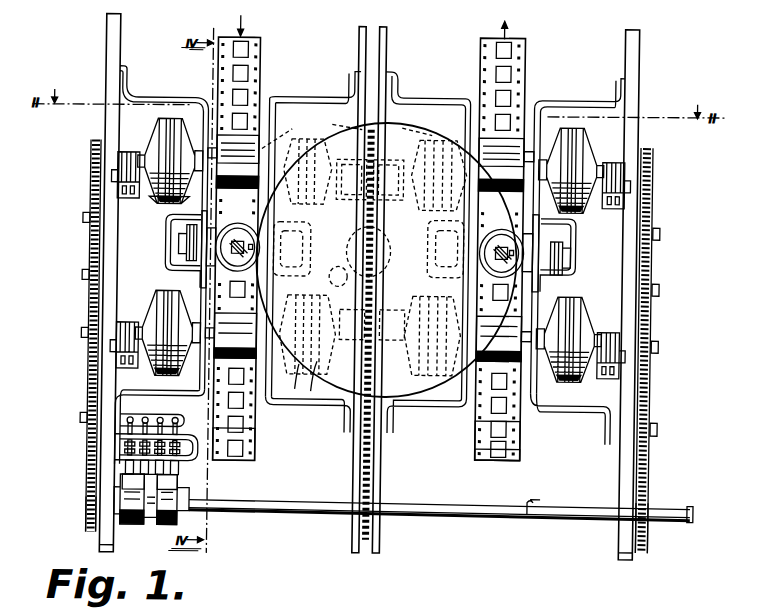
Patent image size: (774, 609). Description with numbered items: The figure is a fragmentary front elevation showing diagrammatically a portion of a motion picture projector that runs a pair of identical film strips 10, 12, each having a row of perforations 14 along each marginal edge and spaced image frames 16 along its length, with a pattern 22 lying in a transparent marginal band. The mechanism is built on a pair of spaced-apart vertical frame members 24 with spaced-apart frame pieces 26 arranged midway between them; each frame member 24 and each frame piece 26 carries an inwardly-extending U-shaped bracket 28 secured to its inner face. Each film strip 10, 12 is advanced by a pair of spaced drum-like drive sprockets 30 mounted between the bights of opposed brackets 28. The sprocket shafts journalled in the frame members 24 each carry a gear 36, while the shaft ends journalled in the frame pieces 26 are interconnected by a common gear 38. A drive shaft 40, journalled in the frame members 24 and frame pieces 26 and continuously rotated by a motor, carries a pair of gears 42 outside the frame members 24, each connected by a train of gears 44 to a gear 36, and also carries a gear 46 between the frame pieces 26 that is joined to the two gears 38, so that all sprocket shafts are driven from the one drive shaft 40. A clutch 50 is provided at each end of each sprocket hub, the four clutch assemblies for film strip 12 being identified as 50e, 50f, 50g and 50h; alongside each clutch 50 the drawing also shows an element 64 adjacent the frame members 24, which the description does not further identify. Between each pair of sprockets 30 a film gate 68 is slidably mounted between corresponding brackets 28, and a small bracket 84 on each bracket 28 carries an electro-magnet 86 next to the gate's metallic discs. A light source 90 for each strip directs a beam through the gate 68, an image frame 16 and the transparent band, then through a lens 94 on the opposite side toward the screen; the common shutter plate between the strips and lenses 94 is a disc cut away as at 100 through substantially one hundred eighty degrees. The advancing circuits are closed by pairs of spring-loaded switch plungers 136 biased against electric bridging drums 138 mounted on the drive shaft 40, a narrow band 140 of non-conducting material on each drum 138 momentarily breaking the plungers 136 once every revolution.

The film strip 10 is at (258, 443).
The film strip 12 is at (523, 436).
The perforations 14 is at (260, 50).
The image frames 16 is at (240, 44).
The pattern 22 is at (500, 460).
The vertical frame members 24 is at (112, 38).
The frame pieces 26 is at (362, 40).
The U-shaped bracket 28 is at (150, 100).
The drive sprockets 30 is at (522, 135).
The gear 36 is at (88, 162).
The common gear 38 is at (368, 155).
The drive shaft 40 is at (283, 512).
The gears 42 is at (88, 527).
The train of gears 44 is at (366, 281).
The gear 46 is at (376, 530).
The clutch 50 is at (158, 143).
The clutch assembly 50e is at (582, 145).
The clutch assembly 50f is at (446, 402).
The clutch assembly 50g is at (472, 104).
The clutch assembly 50h is at (580, 384).
The solenoids 64 is at (122, 155).
The film gate 68 is at (222, 238).
The small bracket 84 is at (167, 234).
The electro-magnet 86 is at (182, 258).
The light source 90 is at (387, 259).
The lens 94 is at (282, 223).
The cut-away 100 is at (317, 372).
The switch plungers 136 is at (178, 424).
The electric bridging drum 138 is at (165, 528).
The band of non-conducting material 140 is at (130, 490).